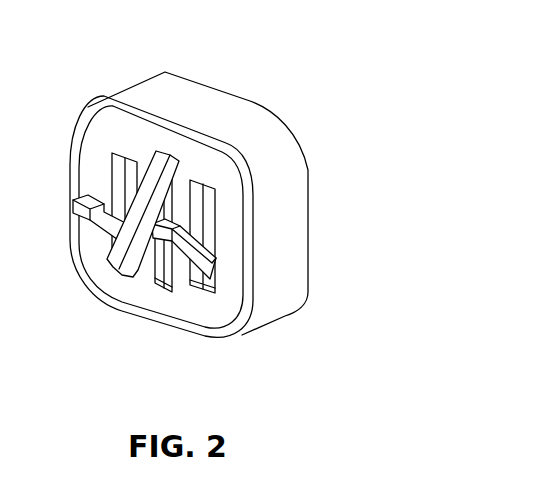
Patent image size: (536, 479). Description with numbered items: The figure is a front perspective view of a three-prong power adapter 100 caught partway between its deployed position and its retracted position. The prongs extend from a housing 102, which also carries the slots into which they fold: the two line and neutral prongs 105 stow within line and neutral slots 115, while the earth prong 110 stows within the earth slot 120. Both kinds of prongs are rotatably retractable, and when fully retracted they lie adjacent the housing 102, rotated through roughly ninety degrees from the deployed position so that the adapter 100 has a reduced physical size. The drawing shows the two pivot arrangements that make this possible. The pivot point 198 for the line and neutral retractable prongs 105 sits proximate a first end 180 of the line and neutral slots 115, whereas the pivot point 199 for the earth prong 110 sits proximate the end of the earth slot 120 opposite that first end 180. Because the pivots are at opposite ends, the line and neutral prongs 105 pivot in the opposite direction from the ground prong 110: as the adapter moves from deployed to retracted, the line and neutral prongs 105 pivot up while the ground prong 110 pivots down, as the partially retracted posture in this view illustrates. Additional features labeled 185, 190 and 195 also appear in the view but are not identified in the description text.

The power adapter 100 is at (302, 44).
The housing 102 is at (277, 282).
The line and neutral prongs 105 is at (93, 222).
The earth prong 110 is at (203, 184).
The line and neutral slots 115 is at (117, 190).
The earth slot 120 is at (164, 272).
The first end of line and neutral slots 180 is at (206, 290).
The support wall 185 is at (244, 162).
The wall base 190 is at (160, 264).
The prong blade 195 is at (157, 152).
The pivot point for line and neutral prongs 198 is at (233, 278).
The pivot point for earth prong 199 is at (158, 200).